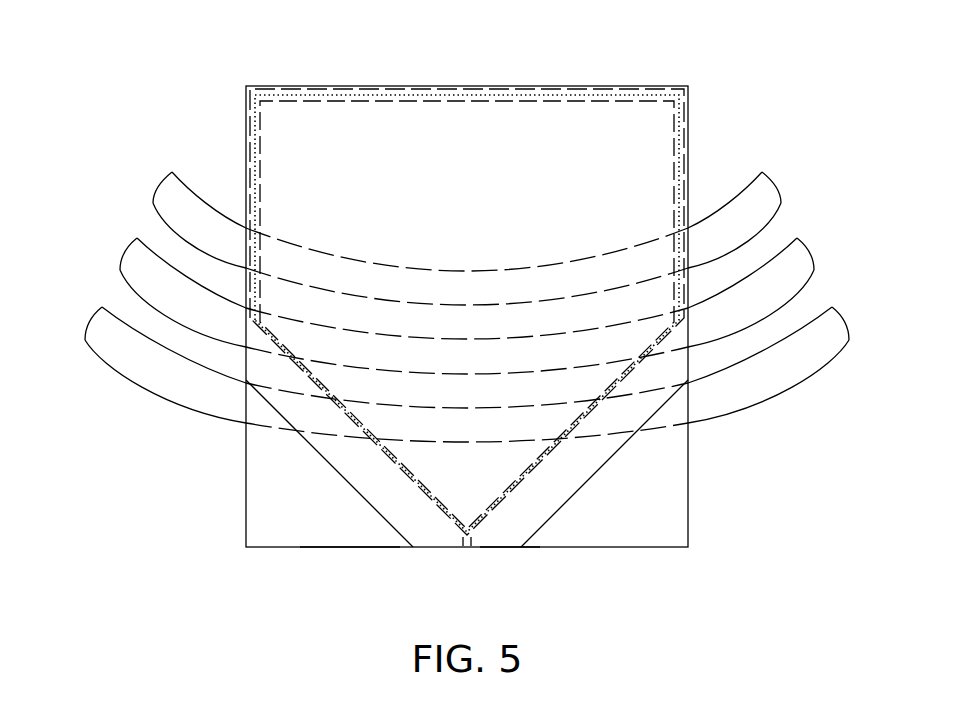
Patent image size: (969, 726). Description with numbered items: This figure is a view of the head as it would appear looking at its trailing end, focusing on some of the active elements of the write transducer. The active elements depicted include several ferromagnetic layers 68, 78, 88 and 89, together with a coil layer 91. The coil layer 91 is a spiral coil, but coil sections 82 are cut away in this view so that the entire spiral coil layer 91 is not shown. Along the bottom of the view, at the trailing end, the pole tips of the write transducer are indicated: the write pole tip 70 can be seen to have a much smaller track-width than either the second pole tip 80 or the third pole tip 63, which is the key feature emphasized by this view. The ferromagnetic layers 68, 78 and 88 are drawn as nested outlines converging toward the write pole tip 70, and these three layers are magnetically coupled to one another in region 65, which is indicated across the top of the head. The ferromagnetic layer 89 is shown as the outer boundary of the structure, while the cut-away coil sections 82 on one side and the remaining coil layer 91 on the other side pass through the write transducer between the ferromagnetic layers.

The region 65 is at (684, 84).
The coil layer 91 is at (153, 163).
The coil sections 82 is at (781, 203).
The ferromagnetic layer 89 is at (248, 477).
The ferromagnetic layer 68 is at (400, 463).
The ferromagnetic layer 88 is at (538, 469).
The ferromagnetic layer 78 is at (607, 462).
The third pole tip 63 is at (345, 558).
The write pole tip 70 is at (467, 558).
The second pole tip 80 is at (502, 558).